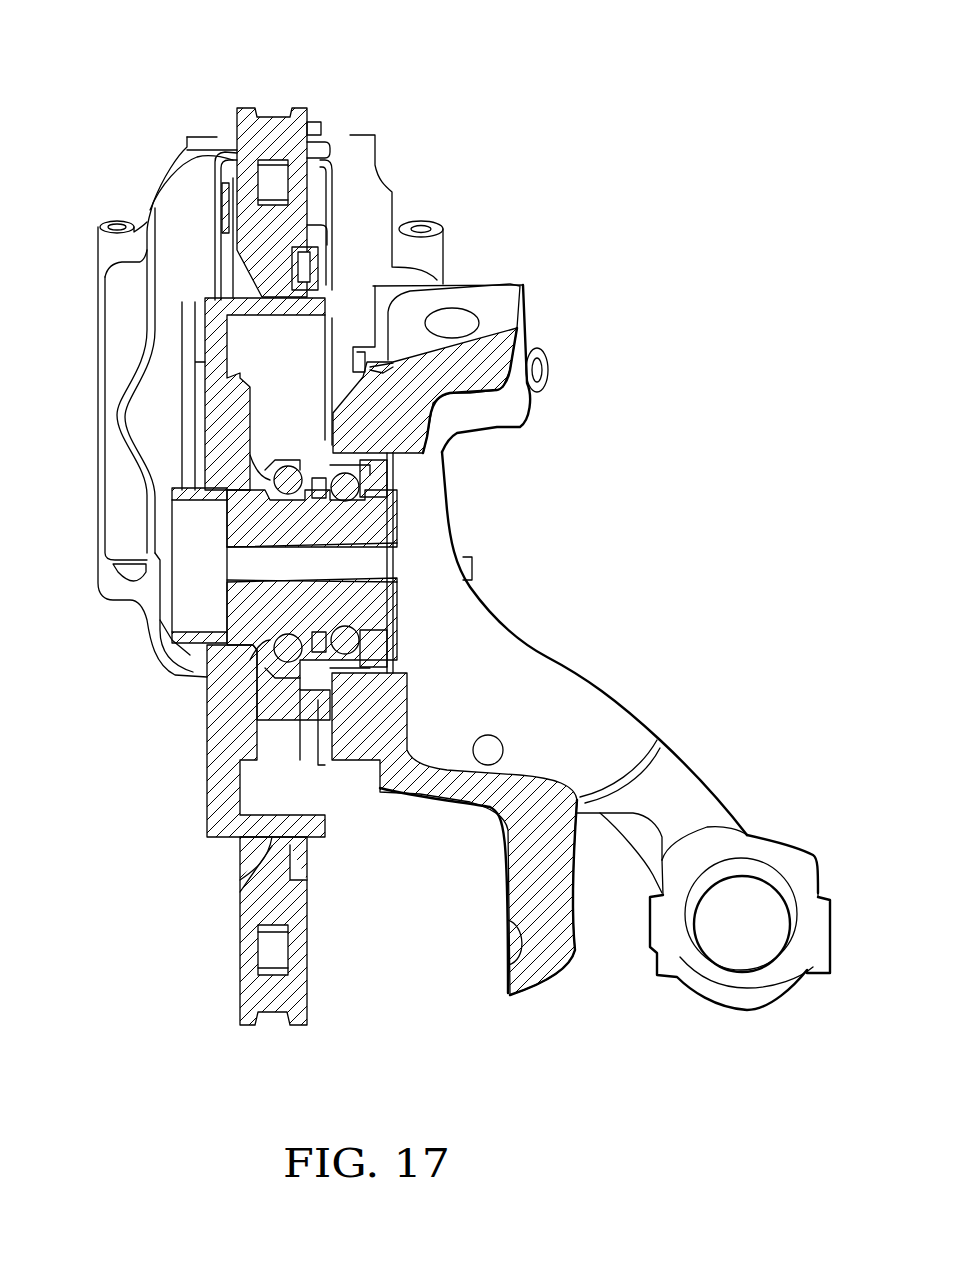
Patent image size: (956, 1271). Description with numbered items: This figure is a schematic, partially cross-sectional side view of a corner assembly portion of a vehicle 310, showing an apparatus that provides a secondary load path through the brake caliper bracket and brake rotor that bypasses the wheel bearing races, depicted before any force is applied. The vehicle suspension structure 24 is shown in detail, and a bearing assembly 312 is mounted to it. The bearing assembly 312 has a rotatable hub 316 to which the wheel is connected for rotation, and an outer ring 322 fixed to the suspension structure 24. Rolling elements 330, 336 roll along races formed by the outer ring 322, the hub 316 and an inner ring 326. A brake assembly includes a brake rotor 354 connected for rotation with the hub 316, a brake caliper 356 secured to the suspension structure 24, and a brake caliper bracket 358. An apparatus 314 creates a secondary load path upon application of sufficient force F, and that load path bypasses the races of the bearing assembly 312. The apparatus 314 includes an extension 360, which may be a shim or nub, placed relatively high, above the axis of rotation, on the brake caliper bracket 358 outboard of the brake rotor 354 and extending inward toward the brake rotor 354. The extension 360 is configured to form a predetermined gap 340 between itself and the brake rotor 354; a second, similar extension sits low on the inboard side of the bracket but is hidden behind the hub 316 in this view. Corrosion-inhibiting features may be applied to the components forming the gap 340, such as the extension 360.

The vehicle suspension structure 24 is at (413, 800).
The vehicle 310 is at (446, 148).
The bearing assembly 312 is at (160, 684).
The apparatus 314 is at (186, 116).
The hub 316 is at (207, 680).
The outer ring 322 is at (316, 715).
The inner ring 326 is at (360, 628).
The rolling elements 330 is at (350, 494).
The rolling elements 336 is at (397, 488).
The predetermined gap 340 is at (232, 215).
The brake rotor 354 is at (195, 800).
The brake caliper 356 is at (450, 257).
The brake caliper bracket 358 is at (350, 137).
The extension 360 is at (225, 203).
The force F is at (230, 1003).